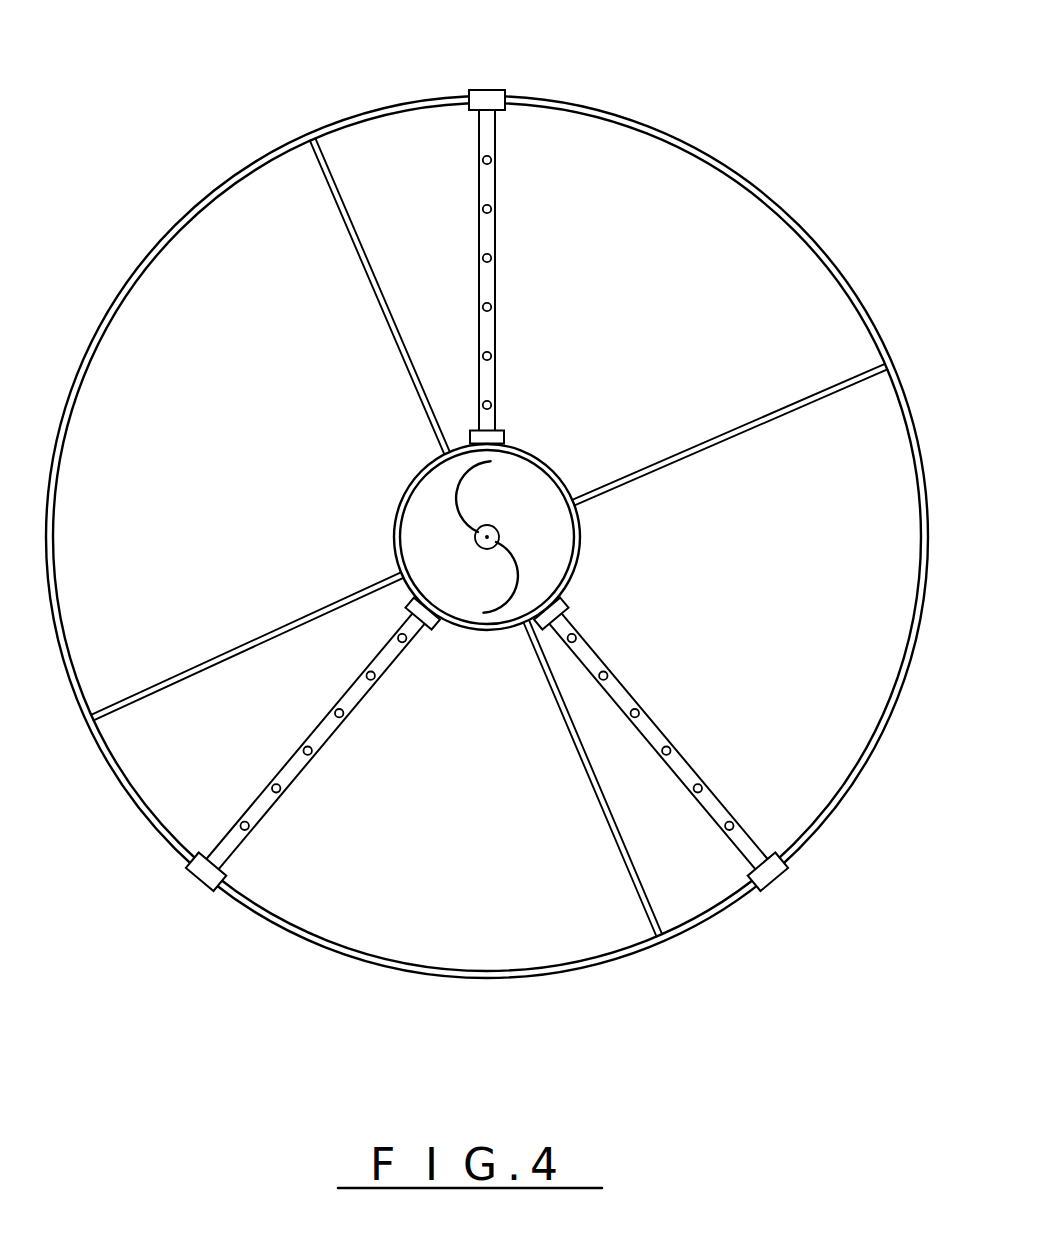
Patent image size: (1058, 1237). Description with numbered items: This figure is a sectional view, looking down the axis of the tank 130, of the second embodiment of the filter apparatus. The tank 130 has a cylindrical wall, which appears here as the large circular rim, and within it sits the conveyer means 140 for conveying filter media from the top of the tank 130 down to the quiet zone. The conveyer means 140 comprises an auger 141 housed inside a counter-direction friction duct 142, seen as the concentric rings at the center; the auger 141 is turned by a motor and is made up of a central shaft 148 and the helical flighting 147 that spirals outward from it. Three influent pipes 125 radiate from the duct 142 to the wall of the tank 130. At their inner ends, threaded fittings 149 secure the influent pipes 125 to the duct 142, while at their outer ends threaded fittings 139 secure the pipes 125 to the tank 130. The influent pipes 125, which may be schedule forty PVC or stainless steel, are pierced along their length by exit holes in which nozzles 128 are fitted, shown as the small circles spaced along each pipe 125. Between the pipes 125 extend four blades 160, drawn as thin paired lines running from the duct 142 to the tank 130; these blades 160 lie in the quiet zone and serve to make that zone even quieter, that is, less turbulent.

The influent pipes 125 is at (497, 247).
The nozzles 128 is at (483, 208).
The tank 130 is at (400, 977).
The threaded fittings 139 is at (498, 88).
The conveyer means 140 is at (584, 350).
The auger 141 is at (458, 487).
The counter-direction friction duct 142 is at (394, 532).
The flighting 147 is at (482, 492).
The shaft 148 is at (502, 545).
The threaded fittings 149 is at (510, 434).
The blades 160 is at (757, 418).